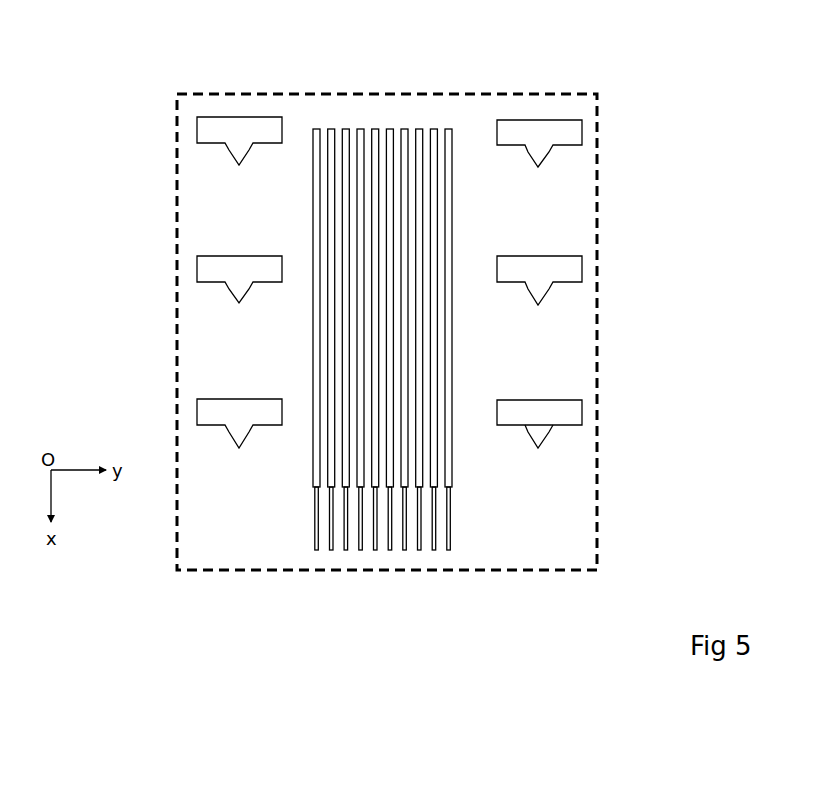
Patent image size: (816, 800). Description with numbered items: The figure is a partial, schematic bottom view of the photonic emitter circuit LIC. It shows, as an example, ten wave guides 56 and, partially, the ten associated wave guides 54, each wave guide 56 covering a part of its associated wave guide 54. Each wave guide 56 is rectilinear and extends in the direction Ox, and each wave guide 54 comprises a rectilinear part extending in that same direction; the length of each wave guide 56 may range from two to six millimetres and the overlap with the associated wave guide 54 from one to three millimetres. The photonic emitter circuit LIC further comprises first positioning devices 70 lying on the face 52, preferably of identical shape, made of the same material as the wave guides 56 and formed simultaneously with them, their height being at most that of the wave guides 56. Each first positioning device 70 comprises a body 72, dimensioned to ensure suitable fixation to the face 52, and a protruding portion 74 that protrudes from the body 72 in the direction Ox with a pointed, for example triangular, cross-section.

The face 52 is at (552, 535).
The wave guide 54 is at (451, 527).
The wave guide 56 is at (313, 140).
The first positioning device 70 is at (440, 303).
The body 72 is at (563, 413).
The protruding portion 74 is at (546, 431).
The photonic emitter circuit LIC is at (600, 110).